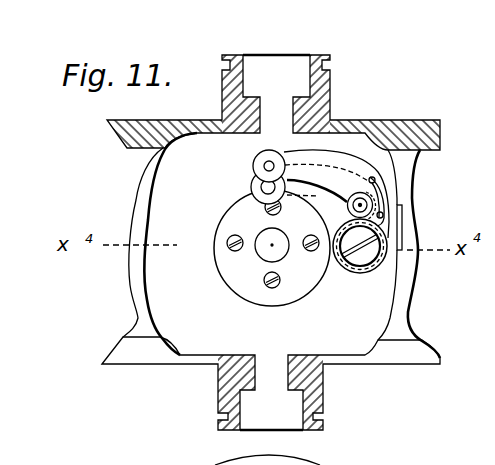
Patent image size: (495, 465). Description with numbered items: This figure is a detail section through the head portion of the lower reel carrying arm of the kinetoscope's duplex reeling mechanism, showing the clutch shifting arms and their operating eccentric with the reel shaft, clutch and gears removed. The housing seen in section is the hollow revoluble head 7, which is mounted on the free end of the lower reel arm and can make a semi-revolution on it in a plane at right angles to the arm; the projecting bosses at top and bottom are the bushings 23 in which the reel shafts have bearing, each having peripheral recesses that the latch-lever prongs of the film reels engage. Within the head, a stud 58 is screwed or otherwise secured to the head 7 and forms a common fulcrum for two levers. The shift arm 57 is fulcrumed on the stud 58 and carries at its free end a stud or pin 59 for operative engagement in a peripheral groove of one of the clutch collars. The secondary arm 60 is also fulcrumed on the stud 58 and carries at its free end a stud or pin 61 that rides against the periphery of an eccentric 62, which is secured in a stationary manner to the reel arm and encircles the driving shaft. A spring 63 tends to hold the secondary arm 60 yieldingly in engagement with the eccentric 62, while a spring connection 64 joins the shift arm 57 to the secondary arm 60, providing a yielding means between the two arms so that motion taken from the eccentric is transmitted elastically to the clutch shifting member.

The hollow revoluble head 7 is at (120, 138).
The bushing 23 is at (330, 70).
The shift arm 57 is at (336, 163).
The stud 58 is at (362, 254).
The stud or pin 59 is at (254, 166).
The secondary arm 60 is at (322, 191).
The stud or pin 61 is at (251, 187).
The eccentric 62 is at (236, 224).
The spring 63 is at (401, 248).
The spring connection 64 is at (376, 223).